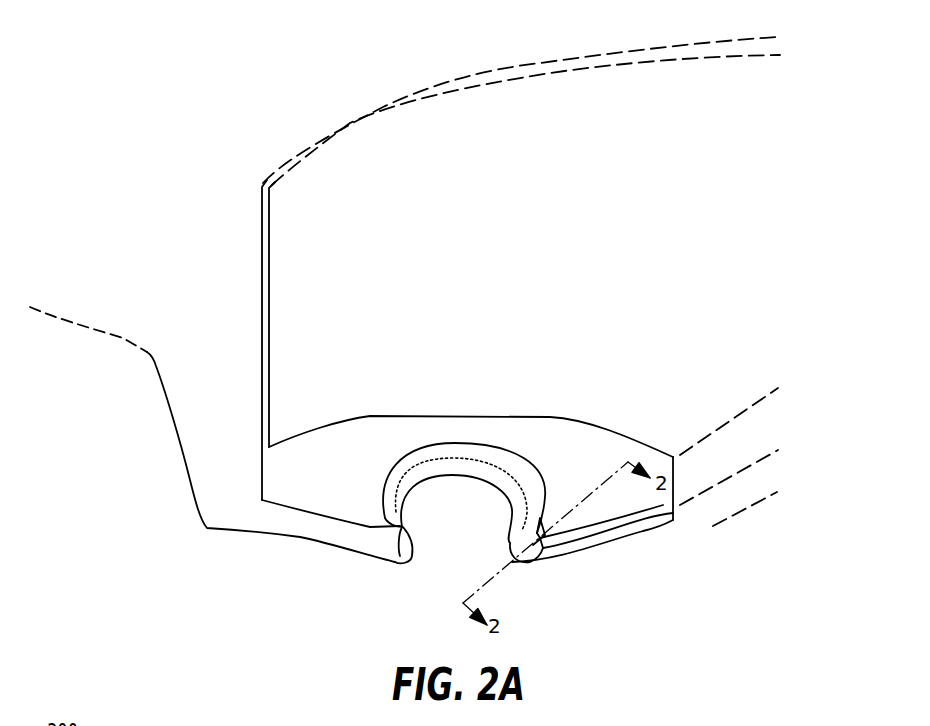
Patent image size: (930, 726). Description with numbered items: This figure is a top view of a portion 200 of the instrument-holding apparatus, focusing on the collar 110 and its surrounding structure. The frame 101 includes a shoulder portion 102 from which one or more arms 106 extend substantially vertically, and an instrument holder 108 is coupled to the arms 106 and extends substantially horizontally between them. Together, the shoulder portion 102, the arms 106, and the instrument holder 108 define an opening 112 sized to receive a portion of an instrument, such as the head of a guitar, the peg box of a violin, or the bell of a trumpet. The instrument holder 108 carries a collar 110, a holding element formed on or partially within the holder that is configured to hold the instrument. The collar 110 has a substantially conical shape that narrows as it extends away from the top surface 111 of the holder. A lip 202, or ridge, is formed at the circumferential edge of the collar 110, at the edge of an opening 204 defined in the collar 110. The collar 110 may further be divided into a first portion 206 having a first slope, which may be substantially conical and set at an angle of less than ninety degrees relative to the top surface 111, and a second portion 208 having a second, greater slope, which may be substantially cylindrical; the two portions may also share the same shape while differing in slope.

The portion 200 is at (210, 68).
The frame 101 is at (422, 42).
The opening 112 is at (368, 257).
The shoulder portion 102 is at (123, 338).
The arm 106 is at (207, 435).
The instrument holder 108 is at (333, 507).
The top surface 111 is at (368, 436).
The collar 110 is at (462, 478).
The first portion 206 is at (515, 502).
The second portion 208 is at (528, 475).
The lip 202 is at (397, 530).
The opening 204 is at (440, 562).